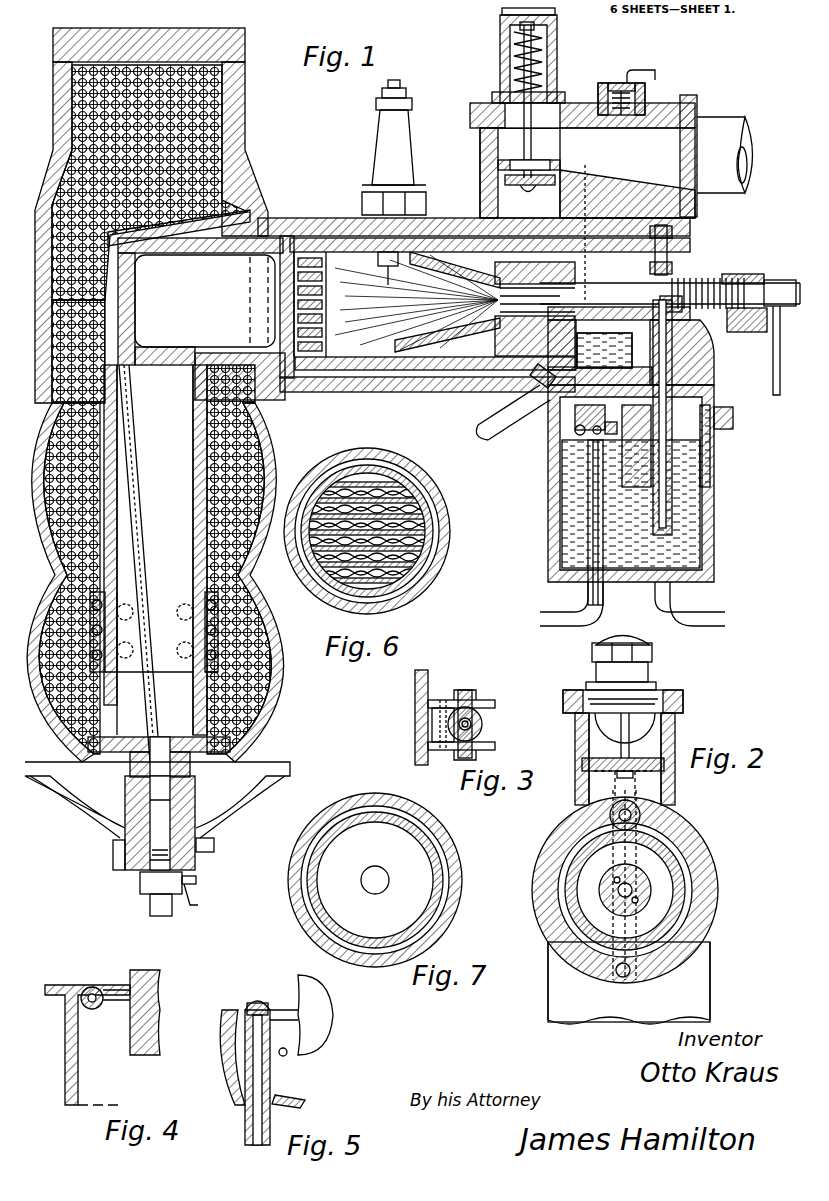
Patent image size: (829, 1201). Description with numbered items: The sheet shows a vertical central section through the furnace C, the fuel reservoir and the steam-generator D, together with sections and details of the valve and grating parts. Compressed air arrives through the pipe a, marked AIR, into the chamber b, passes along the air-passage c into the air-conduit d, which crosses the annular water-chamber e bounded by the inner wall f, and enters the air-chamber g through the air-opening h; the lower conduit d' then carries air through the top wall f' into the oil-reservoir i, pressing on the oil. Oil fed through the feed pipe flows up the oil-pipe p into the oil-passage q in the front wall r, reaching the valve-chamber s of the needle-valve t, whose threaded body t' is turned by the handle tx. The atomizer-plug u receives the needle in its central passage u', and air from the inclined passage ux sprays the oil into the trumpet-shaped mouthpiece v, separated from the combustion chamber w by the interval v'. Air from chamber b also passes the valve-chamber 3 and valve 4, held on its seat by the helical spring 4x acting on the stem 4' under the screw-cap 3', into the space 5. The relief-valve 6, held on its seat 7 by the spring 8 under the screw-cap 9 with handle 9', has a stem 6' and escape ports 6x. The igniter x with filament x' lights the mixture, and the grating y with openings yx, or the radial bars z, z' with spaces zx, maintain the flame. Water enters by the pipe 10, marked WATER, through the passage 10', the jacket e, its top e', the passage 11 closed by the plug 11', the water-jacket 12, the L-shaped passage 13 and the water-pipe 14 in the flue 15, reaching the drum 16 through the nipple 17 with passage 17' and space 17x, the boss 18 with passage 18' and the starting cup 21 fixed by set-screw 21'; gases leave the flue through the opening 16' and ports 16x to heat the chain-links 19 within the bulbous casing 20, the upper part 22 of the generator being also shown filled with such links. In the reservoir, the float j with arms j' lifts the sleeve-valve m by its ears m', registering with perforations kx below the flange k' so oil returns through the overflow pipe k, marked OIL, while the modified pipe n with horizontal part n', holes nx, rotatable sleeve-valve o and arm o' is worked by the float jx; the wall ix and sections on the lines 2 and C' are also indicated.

In FIG. 1, the wire gauze packing 22 is at (72, 97).
In FIG. 1, the chain-links 19 is at (60, 176).
In FIG. 1, the steam-generator D is at (250, 100).
In FIG. 1, the L-shaped water-passage 13 is at (132, 287).
In FIG. 1, the flue 15 is at (175, 385).
In FIG. 1, the water-pipe 14 is at (128, 402).
In FIG. 1, the drum 16 is at (154, 650).
In FIG. 1, the opening in the top of the drum 16' is at (155, 571).
In FIG. 1, the outlets or ports 16x is at (190, 615).
In FIG. 1, the space below the bottom of the drum 17x is at (195, 752).
In FIG. 1, the central passage of the nipple 17' is at (206, 797).
In FIG. 1, the nipple 17 is at (106, 803).
In FIG. 1, the starting cup 21 is at (157, 804).
In FIG. 1, the tubular boss or neck 18 is at (137, 836).
In FIG. 1, the central passage of the tubular boss 18' is at (94, 855).
In FIG. 1, the set-screw 21' is at (214, 864).
In FIG. 1, the lower half of the casing of the generator 20 is at (252, 570).
In FIG. 1, the section line 2— 2 is at (545, 10).
In FIG. 1, the valve-chamber 3 is at (606, 285).
In FIG. 2, the valve-chamber 3 is at (625, 759).
In FIG. 1, the screw-cap 3' is at (573, 102).
In FIG. 2, the screw-cap 3' is at (633, 690).
In FIG. 1, the valve 4 is at (530, 165).
In FIG. 2, the valve 4 is at (574, 785).
In FIG. 1, the valve stem 4' is at (487, 101).
In FIG. 2, the valve stem 4' is at (588, 735).
In FIG. 1, the helical spring 4x is at (514, 60).
In FIG. 1, the electric ignition device x is at (394, 147).
In FIG. 1, the filament x' is at (378, 269).
In FIG. 1, the relief-valve 6 is at (461, 291).
In FIG. 1, the air-passage c is at (590, 170).
In FIG. 2, the air-passage c is at (605, 806).
In FIG. 1, the water-jacket 12 is at (432, 232).
In FIG. 6, the water-jacket 12 is at (348, 468).
In FIG. 7, the water-jacket 12 is at (352, 815).
In FIG. 1, the water-passage 11 is at (475, 216).
In FIG. 2, the water-passage 11 is at (655, 806).
In FIG. 1, the screw-plug 11' is at (685, 240).
In FIG. 1, the annular water-chamber e is at (624, 279).
In FIG. 2, the annular water-chamber e is at (683, 832).
In FIG. 1, the inner cylindrical wall of the water-chamber f is at (531, 219).
In FIG. 2, the inner cylindrical wall of the water-chamber f is at (692, 856).
In FIG. 1, the air-conduit d is at (617, 221).
In FIG. 2, the air-conduit d is at (558, 836).
In FIG. 1, the space in front of the mouthpiece 5 is at (522, 305).
In FIG. 4, the space in front of the mouthpiece 5 is at (33, 1016).
In FIG. 1, the screw-cap 9 is at (617, 88).
In FIG. 1, the handle 9' is at (643, 65).
In FIG. 1, the stem of the relief valve 6' is at (664, 74).
In FIG. 1, the ports 6x is at (652, 102).
In FIG. 1, the helical spring 8 is at (583, 87).
In FIG. 1, the seat of the relief valve 7 is at (588, 142).
In FIG. 1, the top of the water-jacket e' is at (623, 184).
In FIG. 1, the chamber b is at (587, 173).
In FIG. 1, the pipe a is at (725, 135).
In FIG. 1, the air inlet AIR is at (782, 160).
In FIG. 1, the air-opening h is at (563, 292).
In FIG. 1, the needle-valve t is at (670, 323).
In FIG. 1, the body-portion of the needle valve t' is at (723, 264).
In FIG. 1, the handle tx is at (776, 280).
In FIG. 1, the central passage of the atomizer-plug u' is at (675, 277).
In FIG. 1, the valve-chamber s is at (685, 290).
In FIG. 1, the combustion-chamber w is at (324, 304).
In FIG. 6, the combustion-chamber w is at (384, 531).
In FIG. 1, the air-chamber g is at (447, 302).
In FIG. 1, the oil-passage q is at (675, 330).
In FIG. 1, the atomizer-plug u is at (416, 302).
In FIG. 2, the atomizer-plug u is at (659, 890).
In FIG. 1, the trumpet-shaped mouthpiece v is at (381, 320).
In FIG. 1, the interval or space v' is at (385, 346).
In FIG. 1, the water-pipe 10 is at (500, 402).
In FIG. 1, the water-passage 10' is at (450, 407).
In FIG. 2, the water-passage 10' is at (613, 901).
In FIG. 1, the water inlet WATER is at (474, 430).
In FIG. 1, the arms j' is at (526, 483).
In FIG. 3, the arms j' is at (487, 693).
In FIG. 1, the sleeve-valve m is at (592, 416).
In FIG. 3, the sleeve-valve m is at (434, 724).
In FIG. 1, the perforations kx is at (607, 412).
In FIG. 3, the perforations kx is at (490, 720).
In FIG. 1, the annular flange k' is at (631, 399).
In FIG. 1, the passage r' is at (642, 332).
In FIG. 1, the lower air-conduit d' is at (659, 350).
In FIG. 2, the lower air-conduit d' is at (568, 926).
In FIG. 1, the top wall of the oil-reservoir f' is at (696, 371).
In FIG. 1, the float j is at (693, 417).
In FIG. 1, the oil-pipe p is at (692, 526).
In FIG. 1, the oil-reservoir i is at (643, 483).
In FIG. 2, the oil-reservoir i is at (718, 993).
In FIG. 1, the oil-overflow pipe k is at (571, 619).
In FIG. 3, the oil-overflow pipe k is at (435, 741).
In FIG. 1, the oil flow OIL is at (545, 610).
In FIG. 1, the section line C' is at (473, 243).
In FIG. 7, the furnace C is at (317, 795).
In FIG. 2, the furnace C is at (757, 915).
In FIG. 6, the grating y is at (389, 535).
In FIG. 6, the openings in the grating yx is at (425, 525).
In FIG. 3, the lateral wall of the fuel-reservoir ix is at (415, 680).
In FIG. 2, the lateral wall of the fuel-reservoir ix is at (659, 1001).
In FIG. 4, the lateral wall of the fuel-reservoir ix is at (68, 1086).
In FIG. 5, the lateral wall of the fuel-reservoir ix is at (232, 1060).
In FIG. 3, the ears m' is at (502, 722).
In FIG. 7, the bars z is at (345, 880).
In FIG. 7, the shorter bar z' is at (394, 880).
In FIG. 7, the spaces between the bars zx is at (305, 930).
In FIG. 2, the front wall of the furnace r is at (639, 910).
In FIG. 2, the inclined air-passage ux is at (604, 870).
In FIG. 4, the horizontally-disposed part of the oil-overflow pipe n' is at (81, 1045).
In FIG. 5, the horizontally-disposed part of the oil-overflow pipe n' is at (291, 1086).
In FIG. 4, the sleeve-valve o is at (75, 980).
In FIG. 5, the sleeve-valve o is at (285, 1058).
In FIG. 4, the arm o' is at (116, 1023).
In FIG. 5, the arm o' is at (289, 991).
In FIG. 4, the holes nx is at (105, 988).
In FIG. 5, the holes nx is at (268, 1000).
In FIG. 4, the float jx is at (150, 976).
In FIG. 5, the float jx is at (320, 1022).
In FIG. 5, the oil-overflow pipe n is at (240, 1082).